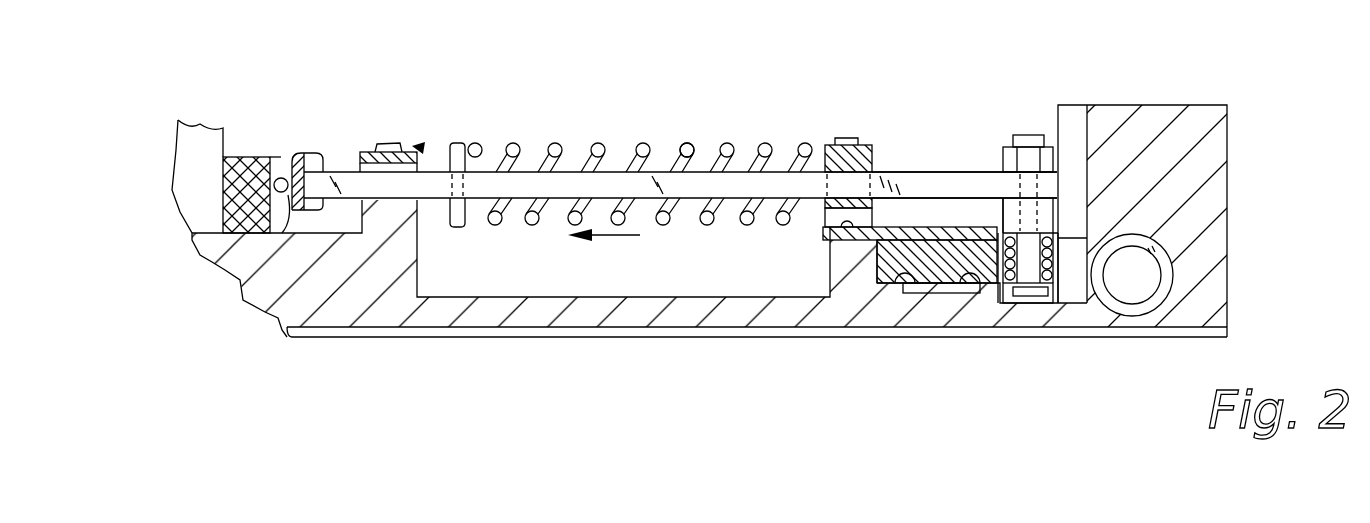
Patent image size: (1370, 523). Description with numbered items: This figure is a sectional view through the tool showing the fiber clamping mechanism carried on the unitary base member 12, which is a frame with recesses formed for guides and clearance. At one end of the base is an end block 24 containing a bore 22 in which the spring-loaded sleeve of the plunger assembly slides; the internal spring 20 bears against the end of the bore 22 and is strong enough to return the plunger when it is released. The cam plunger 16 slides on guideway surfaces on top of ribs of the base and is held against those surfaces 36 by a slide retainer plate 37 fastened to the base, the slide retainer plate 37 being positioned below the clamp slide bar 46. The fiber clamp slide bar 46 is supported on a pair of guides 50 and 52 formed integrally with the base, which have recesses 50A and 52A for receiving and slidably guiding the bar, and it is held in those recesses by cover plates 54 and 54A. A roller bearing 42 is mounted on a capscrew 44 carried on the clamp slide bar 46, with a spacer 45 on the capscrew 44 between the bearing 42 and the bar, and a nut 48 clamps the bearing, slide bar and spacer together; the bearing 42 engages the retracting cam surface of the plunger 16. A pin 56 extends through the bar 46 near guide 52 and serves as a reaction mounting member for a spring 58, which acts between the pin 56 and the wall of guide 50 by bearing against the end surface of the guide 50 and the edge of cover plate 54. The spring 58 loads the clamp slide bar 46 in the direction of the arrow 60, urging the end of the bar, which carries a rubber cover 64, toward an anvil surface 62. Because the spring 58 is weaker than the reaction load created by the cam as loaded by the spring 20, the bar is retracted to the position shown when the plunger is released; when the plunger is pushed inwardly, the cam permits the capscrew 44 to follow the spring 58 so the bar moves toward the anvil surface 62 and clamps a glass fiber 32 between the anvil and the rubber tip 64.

The base member 12 is at (700, 305).
The cam plunger 16 is at (903, 250).
The spring 20 is at (1157, 276).
The bore 22 is at (1173, 263).
The end block 24 is at (1178, 158).
The glass fiber 32 is at (250, 272).
The guideway surfaces 36 is at (965, 293).
The slide retainer plate 37 is at (948, 226).
The roller bearing 42 is at (1045, 303).
The capscrew 44 is at (1044, 147).
The spacer 45 is at (1003, 205).
The clamp slide bar 46 is at (612, 172).
The nut 48 is at (1028, 135).
The guide 50 is at (823, 217).
The recess 50A is at (873, 170).
The guide 52 is at (420, 226).
The recess 52A is at (357, 168).
The cover plate 54 is at (832, 145).
The cover plate 54A is at (420, 146).
The pin 56 is at (466, 148).
The spring 58 is at (690, 145).
The arrow 60 is at (622, 236).
The anvil surface 62 is at (263, 157).
The rubber cover 64 is at (305, 153).